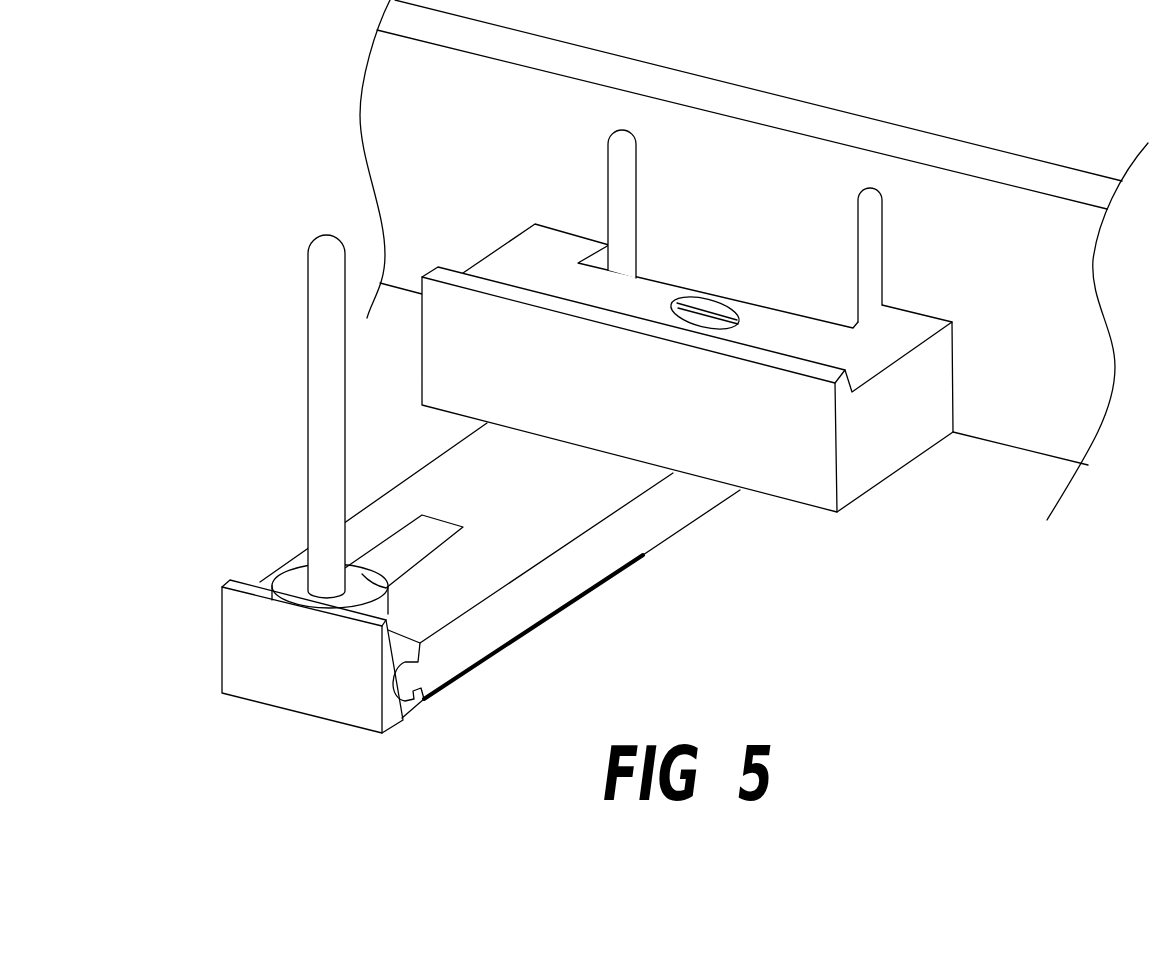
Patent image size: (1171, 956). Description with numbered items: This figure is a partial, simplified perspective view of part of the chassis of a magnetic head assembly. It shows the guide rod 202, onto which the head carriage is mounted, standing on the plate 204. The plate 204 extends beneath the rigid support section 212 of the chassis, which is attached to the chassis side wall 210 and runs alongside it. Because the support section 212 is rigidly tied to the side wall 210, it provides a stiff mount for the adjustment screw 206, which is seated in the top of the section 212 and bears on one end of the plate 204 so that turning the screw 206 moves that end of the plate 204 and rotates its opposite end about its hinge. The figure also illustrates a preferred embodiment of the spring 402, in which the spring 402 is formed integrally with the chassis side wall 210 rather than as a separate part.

The guide rod 202 is at (308, 240).
The plate 204 is at (595, 587).
The adjustment screw 206 is at (693, 328).
The chassis side wall 210 is at (870, 120).
The rigid support section 212 is at (903, 362).
The spring 402 is at (858, 263).